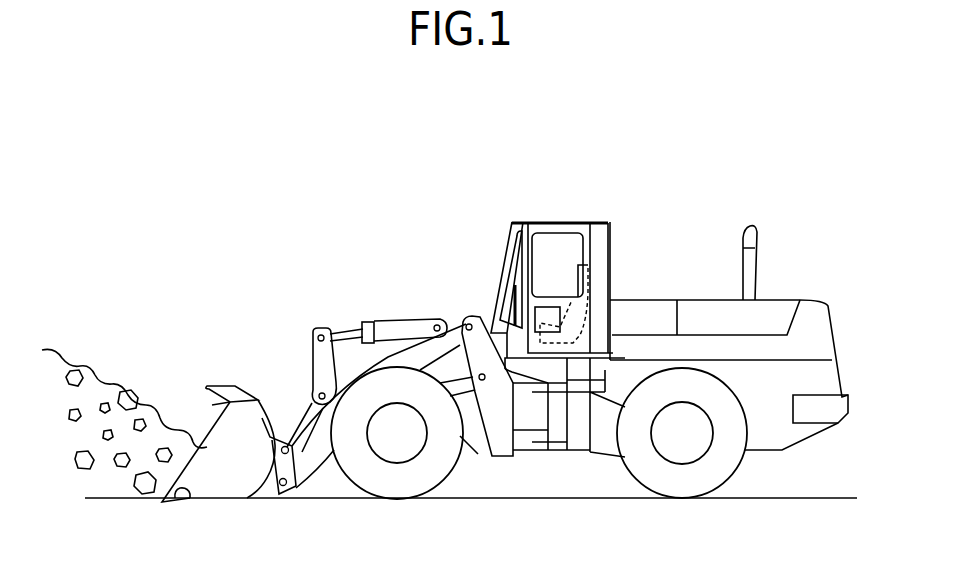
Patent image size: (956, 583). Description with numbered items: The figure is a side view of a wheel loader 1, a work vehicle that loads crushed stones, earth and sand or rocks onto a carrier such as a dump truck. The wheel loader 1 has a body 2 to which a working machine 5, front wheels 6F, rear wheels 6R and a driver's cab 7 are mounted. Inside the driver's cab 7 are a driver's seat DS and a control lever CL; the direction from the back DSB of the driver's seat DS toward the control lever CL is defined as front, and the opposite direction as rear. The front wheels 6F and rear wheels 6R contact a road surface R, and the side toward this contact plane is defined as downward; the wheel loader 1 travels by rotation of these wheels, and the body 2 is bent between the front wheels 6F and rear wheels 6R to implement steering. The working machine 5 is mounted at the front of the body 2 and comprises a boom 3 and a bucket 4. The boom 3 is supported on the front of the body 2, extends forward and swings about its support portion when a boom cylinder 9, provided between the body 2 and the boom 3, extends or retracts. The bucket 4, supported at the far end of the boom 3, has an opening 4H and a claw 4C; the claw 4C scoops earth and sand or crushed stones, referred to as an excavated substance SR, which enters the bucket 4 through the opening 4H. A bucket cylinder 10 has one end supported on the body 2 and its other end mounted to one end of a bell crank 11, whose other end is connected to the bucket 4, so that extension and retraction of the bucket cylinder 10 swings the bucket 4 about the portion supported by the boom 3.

The wheel loader 1 is at (728, 164).
The body 2 is at (582, 442).
The boom 3 is at (402, 362).
The bucket 4 is at (224, 416).
The claw 4C is at (182, 499).
The opening 4H is at (209, 410).
The working machine 5 is at (345, 273).
The front wheels 6F is at (398, 487).
The rear wheels 6R is at (680, 487).
The driver's cab 7 is at (571, 263).
The boom cylinder 9 is at (463, 387).
The bucket cylinder 10 is at (407, 327).
The bell crank 11 is at (320, 366).
The control lever CL is at (512, 281).
The driver's seat DS is at (565, 268).
The back of the driver's seat DSB is at (588, 268).
The road surface R is at (833, 499).
The excavated substance SR is at (108, 397).